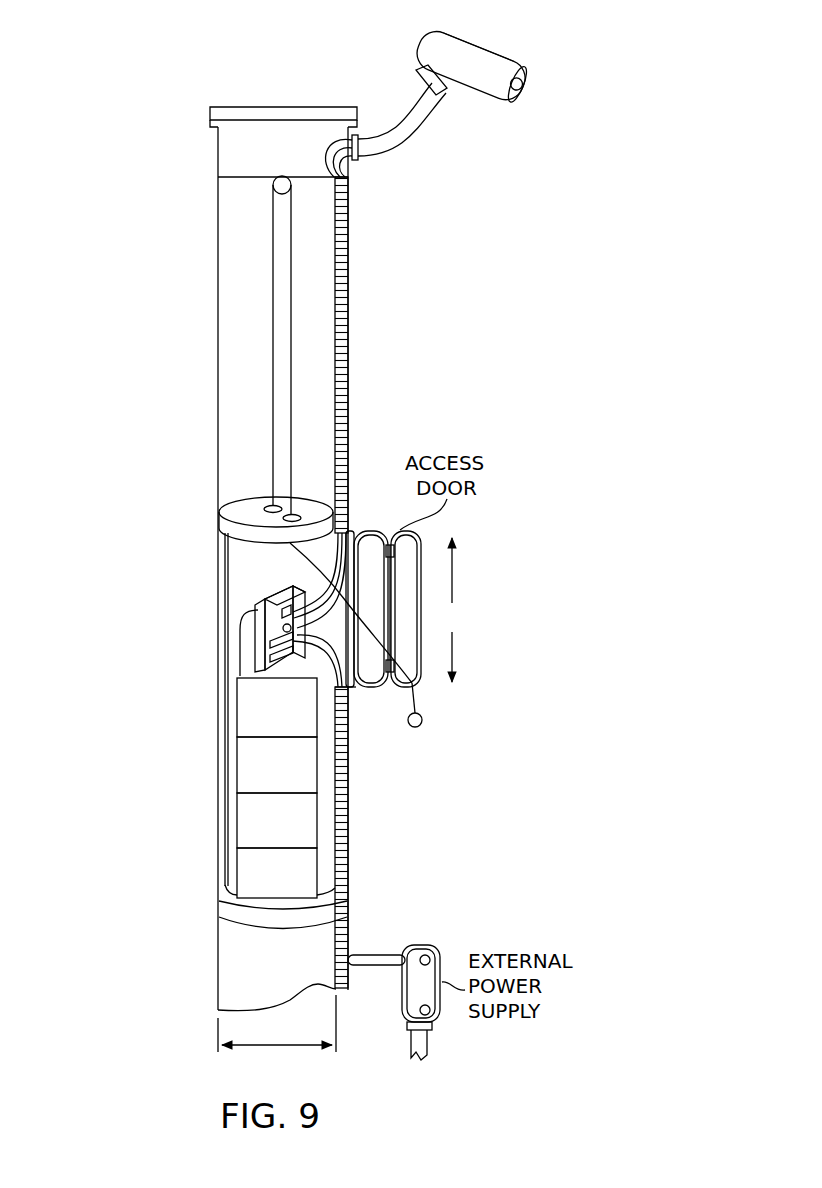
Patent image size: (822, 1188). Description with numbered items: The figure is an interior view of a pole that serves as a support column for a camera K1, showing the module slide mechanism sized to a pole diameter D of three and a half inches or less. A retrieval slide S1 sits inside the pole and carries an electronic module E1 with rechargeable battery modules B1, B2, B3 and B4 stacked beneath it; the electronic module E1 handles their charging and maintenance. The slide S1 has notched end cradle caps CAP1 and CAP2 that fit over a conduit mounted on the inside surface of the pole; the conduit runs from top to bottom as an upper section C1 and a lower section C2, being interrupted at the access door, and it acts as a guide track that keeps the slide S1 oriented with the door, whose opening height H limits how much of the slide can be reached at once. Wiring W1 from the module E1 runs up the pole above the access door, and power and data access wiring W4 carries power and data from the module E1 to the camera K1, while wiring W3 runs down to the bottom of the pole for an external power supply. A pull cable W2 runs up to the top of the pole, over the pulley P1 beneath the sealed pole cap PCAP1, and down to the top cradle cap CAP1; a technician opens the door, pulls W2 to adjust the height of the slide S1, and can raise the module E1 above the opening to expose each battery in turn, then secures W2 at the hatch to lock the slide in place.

The pole cap PCAP1 is at (259, 99).
The pulley P1 is at (270, 190).
The camera K1 is at (471, 65).
The power and data access wiring W4 is at (386, 137).
The conduit C1 is at (350, 320).
The top cradle cap CAP1 is at (214, 522).
The wiring W1 is at (340, 567).
The retrieval slide S1 is at (337, 613).
The electronic module E1 is at (271, 622).
The access door opening height H is at (451, 610).
The wiring W3 is at (341, 676).
The pull cable W2 is at (435, 719).
The battery module B1 is at (277, 707).
The battery module B2 is at (277, 765).
The battery module B3 is at (277, 820).
The battery module B4 is at (277, 873).
The conduit C2 is at (352, 803).
The bottom cradle cap CAP2 is at (214, 913).
The diameter D is at (277, 1023).